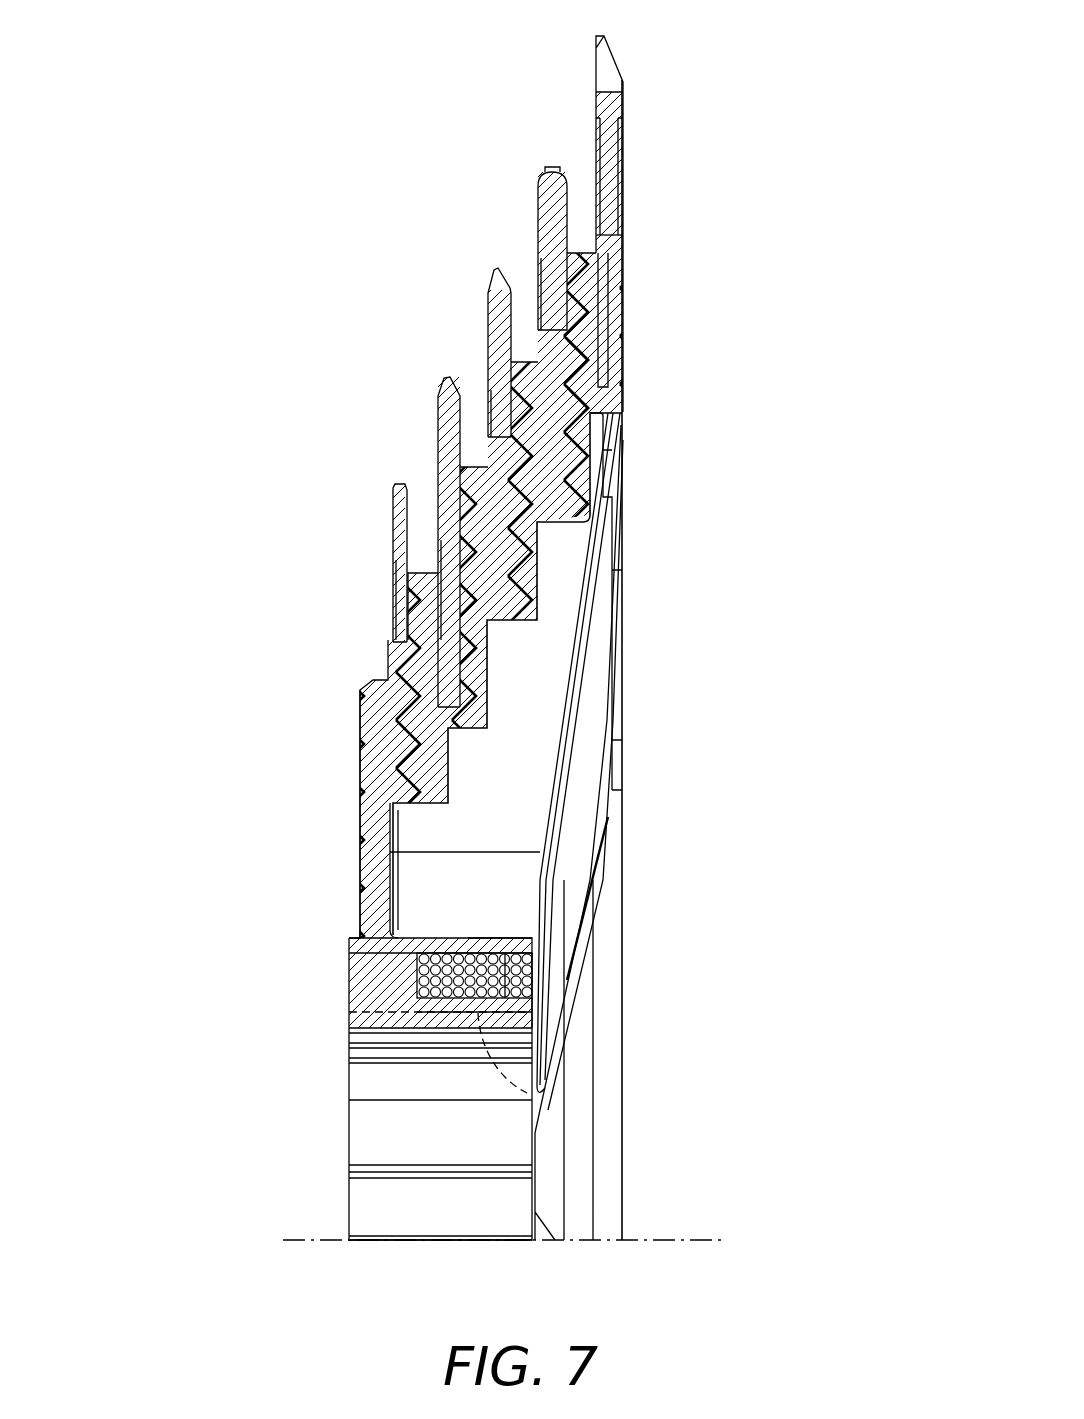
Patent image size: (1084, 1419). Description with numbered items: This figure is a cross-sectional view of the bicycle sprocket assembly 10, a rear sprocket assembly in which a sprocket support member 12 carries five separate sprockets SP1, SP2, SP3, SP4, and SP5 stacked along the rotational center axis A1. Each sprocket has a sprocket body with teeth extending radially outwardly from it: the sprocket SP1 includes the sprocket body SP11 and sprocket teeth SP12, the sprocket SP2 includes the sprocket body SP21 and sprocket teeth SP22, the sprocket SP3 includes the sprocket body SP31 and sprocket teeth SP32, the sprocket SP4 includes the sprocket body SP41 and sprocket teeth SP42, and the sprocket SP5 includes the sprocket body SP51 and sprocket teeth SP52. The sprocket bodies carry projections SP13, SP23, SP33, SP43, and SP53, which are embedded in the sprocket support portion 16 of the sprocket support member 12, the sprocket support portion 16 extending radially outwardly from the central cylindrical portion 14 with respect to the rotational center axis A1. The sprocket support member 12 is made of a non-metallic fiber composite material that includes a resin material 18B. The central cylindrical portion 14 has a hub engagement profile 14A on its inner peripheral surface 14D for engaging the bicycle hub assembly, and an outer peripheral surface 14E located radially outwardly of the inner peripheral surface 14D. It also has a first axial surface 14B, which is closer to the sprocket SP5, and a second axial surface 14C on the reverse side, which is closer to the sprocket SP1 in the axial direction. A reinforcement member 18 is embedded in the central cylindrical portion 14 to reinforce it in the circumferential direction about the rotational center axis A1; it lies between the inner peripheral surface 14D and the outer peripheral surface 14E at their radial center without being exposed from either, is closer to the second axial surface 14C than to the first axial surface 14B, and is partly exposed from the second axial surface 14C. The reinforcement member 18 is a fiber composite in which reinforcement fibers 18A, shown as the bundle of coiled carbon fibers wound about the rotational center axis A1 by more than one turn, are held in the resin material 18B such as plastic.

The bicycle sprocket assembly 10 is at (332, 246).
The sprocket support member 12 is at (346, 808).
The central cylindrical portion 14 is at (360, 970).
The hub engagement profile 14A is at (395, 1047).
The first axial surface 14B is at (349, 950).
The second axial surface 14C is at (535, 1005).
The inner peripheral surface 14D is at (553, 1100).
The outer peripheral surface 14E is at (468, 938).
The sprocket support portion 16 is at (554, 617).
The reinforcement member 18 is at (409, 983).
The reinforcement fiber 18A is at (505, 968).
The resin material 18B is at (532, 1013).
The rotational center axis A1 is at (720, 1234).
The sprocket SP1 is at (632, 52).
The sprocket body SP11 is at (613, 220).
The sprocket teeth SP12 is at (608, 113).
The projections SP13 is at (601, 362).
The sprocket SP2 is at (558, 151).
The sprocket body SP21 is at (588, 333).
The sprocket teeth SP22 is at (548, 205).
The projections SP23 is at (560, 460).
The sprocket SP3 is at (498, 253).
The sprocket body SP31 is at (518, 490).
The sprocket teeth SP32 is at (497, 302).
The projections SP33 is at (500, 555).
The sprocket SP4 is at (449, 354).
The sprocket body SP41 is at (447, 567).
The sprocket teeth SP42 is at (447, 410).
The projections SP43 is at (452, 665).
The sprocket SP5 is at (395, 461).
The sprocket body SP51 is at (400, 648).
The sprocket teeth SP52 is at (398, 500).
The projections SP53 is at (395, 745).